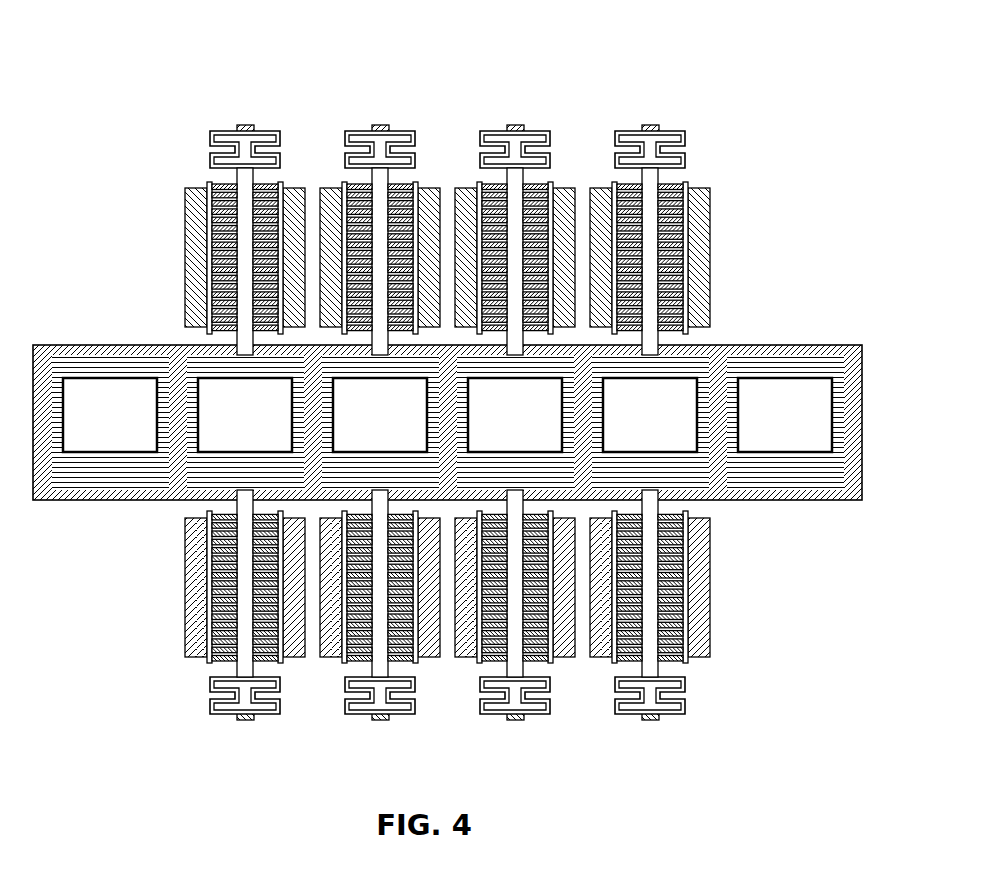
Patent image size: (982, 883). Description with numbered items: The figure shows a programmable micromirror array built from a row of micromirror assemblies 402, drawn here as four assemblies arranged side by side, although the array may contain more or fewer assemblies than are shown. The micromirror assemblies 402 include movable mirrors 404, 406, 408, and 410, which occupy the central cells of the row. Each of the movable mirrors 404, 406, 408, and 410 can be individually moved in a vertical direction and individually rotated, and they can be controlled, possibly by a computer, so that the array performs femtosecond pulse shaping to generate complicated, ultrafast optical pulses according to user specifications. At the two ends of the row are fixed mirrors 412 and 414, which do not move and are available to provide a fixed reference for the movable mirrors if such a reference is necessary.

The micromirror assemblies 402 is at (243, 123).
The movable mirror 404 is at (245, 422).
The movable mirror 406 is at (380, 422).
The movable mirror 408 is at (515, 422).
The movable mirror 410 is at (650, 422).
The fixed mirror 412 is at (110, 422).
The fixed mirror 414 is at (785, 422).